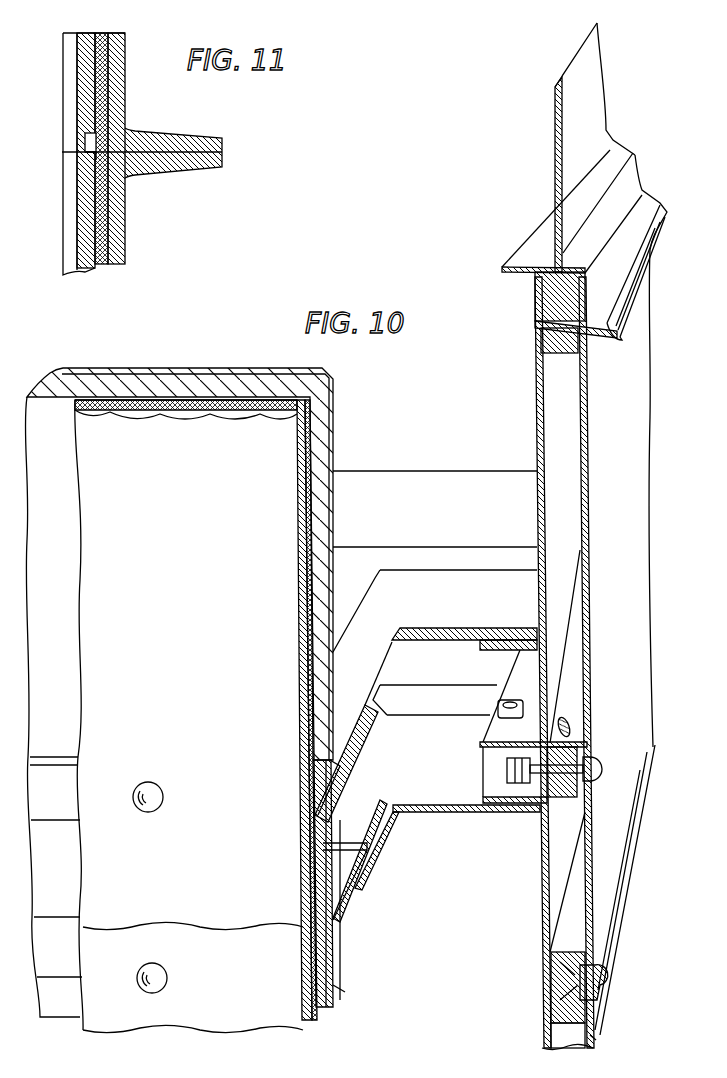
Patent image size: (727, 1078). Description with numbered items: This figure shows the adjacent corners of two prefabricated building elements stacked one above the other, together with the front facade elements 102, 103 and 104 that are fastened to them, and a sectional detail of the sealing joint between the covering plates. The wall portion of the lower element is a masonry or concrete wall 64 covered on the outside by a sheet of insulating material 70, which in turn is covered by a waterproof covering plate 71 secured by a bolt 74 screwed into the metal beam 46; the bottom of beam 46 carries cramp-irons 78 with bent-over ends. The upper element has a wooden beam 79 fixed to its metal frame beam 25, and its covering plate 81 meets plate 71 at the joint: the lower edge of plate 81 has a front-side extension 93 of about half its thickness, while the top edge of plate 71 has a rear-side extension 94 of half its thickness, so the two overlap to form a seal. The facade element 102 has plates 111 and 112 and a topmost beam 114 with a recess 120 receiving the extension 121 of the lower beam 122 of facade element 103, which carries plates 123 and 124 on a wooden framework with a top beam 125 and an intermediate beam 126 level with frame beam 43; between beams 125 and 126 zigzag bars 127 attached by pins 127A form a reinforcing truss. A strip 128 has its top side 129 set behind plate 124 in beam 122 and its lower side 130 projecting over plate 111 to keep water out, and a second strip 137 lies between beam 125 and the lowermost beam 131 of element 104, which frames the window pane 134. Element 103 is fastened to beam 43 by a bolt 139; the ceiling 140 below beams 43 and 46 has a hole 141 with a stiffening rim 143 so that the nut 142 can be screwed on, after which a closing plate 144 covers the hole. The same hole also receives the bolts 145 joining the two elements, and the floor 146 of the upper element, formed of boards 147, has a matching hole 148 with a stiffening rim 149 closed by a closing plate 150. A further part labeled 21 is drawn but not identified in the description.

In FIG. 10, the mounting bracket 21 is at (515, 660).
In FIG. 11, the metal frame beam 25 is at (117, 110).
In FIG. 10, the metal frame beam 25 is at (308, 882).
In FIG. 10, the frame beam 43 is at (495, 778).
In FIG. 11, the metal beam 46 is at (196, 165).
In FIG. 10, the metal beam 46 is at (352, 934).
In FIG. 10, the wall 64 is at (350, 965).
In FIG. 11, the sheet of insulating material 70 is at (110, 235).
In FIG. 10, the sheet of insulating material 70 is at (314, 1012).
In FIG. 11, the covering plate 71 is at (85, 218).
In FIG. 10, the covering plate 71 is at (284, 1022).
In FIG. 10, the bolt 74 is at (166, 986).
In FIG. 10, the cramp-irons 78 is at (345, 991).
In FIG. 10, the wooden beam 79 is at (310, 768).
In FIG. 11, the covering plate 81 is at (62, 79).
In FIG. 10, the covering plate 81 is at (85, 517).
In FIG. 11, the extension 93 is at (80, 140).
In FIG. 11, the extension 94 is at (92, 157).
In FIG. 10, the front facade element 102 is at (543, 1045).
In FIG. 10, the facade element 103 is at (542, 912).
In FIG. 10, the facade element 104 is at (522, 212).
In FIG. 10, the plate 111 is at (597, 1040).
In FIG. 10, the plate 112 is at (548, 1025).
In FIG. 10, the topmost beam 114 is at (565, 1040).
In FIG. 10, the recess 120 is at (575, 1005).
In FIG. 10, the extension 121 is at (570, 975).
In FIG. 10, the lower beam 122 is at (550, 969).
In FIG. 10, the plate 123 is at (630, 860).
In FIG. 10, the plate 124 is at (543, 878).
In FIG. 10, the wooden beam 125 is at (553, 348).
In FIG. 10, the wooden beam 126 is at (583, 797).
In FIG. 10, the bars 127 is at (578, 692).
In FIG. 10, the pins 127A is at (578, 745).
In FIG. 10, the strip 128 is at (600, 980).
In FIG. 10, the top side 129 is at (597, 968).
In FIG. 10, the lower side 130 is at (600, 992).
In FIG. 10, the lowermost beam 131 is at (540, 285).
In FIG. 10, the pane 134 is at (554, 95).
In FIG. 10, the strip 137 is at (650, 266).
In FIG. 10, the bolt 139 is at (598, 769).
In FIG. 10, the ceiling 140 is at (364, 908).
In FIG. 10, the hole 141 is at (378, 893).
In FIG. 10, the nut 142 is at (495, 762).
In FIG. 10, the stiffening rim 143 is at (427, 710).
In FIG. 10, the closing plate 144 is at (420, 808).
In FIG. 10, the bolts 145 is at (505, 692).
In FIG. 10, the floor part 146 is at (416, 460).
In FIG. 10, the boards 147 is at (500, 475).
In FIG. 10, the hole 148 is at (518, 568).
In FIG. 10, the stiffening rim 149 is at (376, 742).
In FIG. 10, the closing plate 150 is at (382, 590).